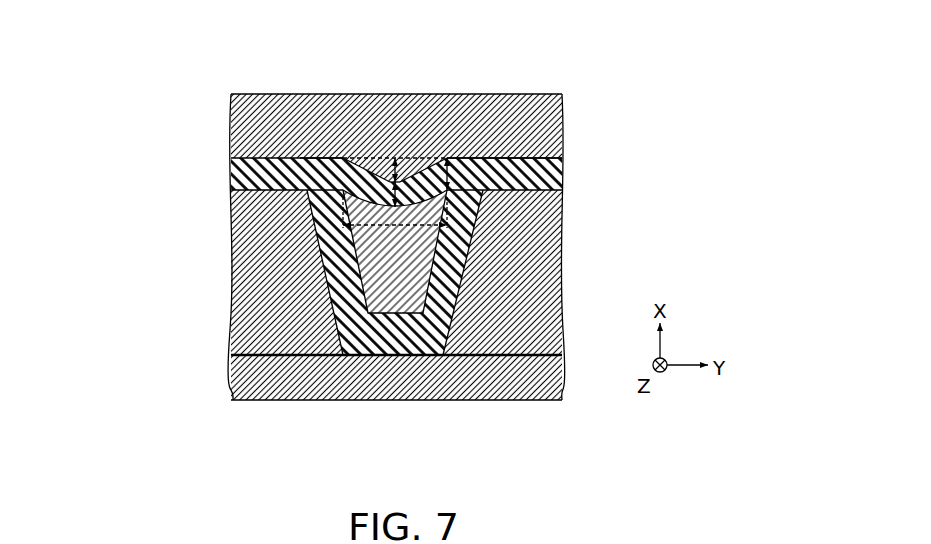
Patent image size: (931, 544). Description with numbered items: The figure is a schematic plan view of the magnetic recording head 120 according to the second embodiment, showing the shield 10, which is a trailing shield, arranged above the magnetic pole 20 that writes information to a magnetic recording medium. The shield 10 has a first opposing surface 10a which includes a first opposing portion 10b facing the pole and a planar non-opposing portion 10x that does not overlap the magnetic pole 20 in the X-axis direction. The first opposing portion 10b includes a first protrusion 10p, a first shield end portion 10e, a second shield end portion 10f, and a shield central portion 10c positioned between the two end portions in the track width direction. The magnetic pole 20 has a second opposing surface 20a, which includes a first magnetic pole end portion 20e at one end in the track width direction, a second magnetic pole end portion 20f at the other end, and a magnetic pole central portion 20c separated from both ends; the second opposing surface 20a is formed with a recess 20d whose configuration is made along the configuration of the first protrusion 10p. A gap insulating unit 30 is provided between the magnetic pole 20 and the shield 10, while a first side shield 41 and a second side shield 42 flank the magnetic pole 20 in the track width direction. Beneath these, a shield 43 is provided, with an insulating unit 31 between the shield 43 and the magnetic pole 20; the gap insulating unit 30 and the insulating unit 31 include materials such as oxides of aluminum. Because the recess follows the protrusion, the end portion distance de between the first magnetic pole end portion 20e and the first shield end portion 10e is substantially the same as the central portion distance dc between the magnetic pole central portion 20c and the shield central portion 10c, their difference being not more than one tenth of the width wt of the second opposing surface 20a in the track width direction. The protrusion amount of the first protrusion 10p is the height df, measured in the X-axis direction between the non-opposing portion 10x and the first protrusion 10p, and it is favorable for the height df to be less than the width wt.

The shield 10 is at (262, 125).
The first opposing surface 10a is at (360, 168).
The first opposing portion 10b is at (422, 170).
The shield central portion 10c is at (398, 180).
The first shield end portion 10e is at (450, 157).
The second shield end portion 10f is at (340, 158).
The first protrusion 10p is at (404, 176).
The non-opposing portion 10x is at (518, 157).
The magnetic pole 20 is at (357, 243).
The second opposing surface 20a is at (247, 96).
The magnetic pole central portion 20c is at (402, 270).
The recess 20d is at (378, 190).
The first magnetic pole end portion 20e is at (452, 193).
The second magnetic pole end portion 20f is at (330, 190).
The gap insulating unit 30 is at (232, 168).
The insulating unit 31 is at (345, 330).
The first side shield 41 is at (267, 268).
The second side shield 42 is at (518, 270).
The shield 43 is at (303, 378).
The magnetic recording head 120 is at (668, 115).
The central portion distance dc is at (392, 170).
The height df is at (394, 195).
The end portion distance de is at (452, 174).
The width wt is at (393, 228).